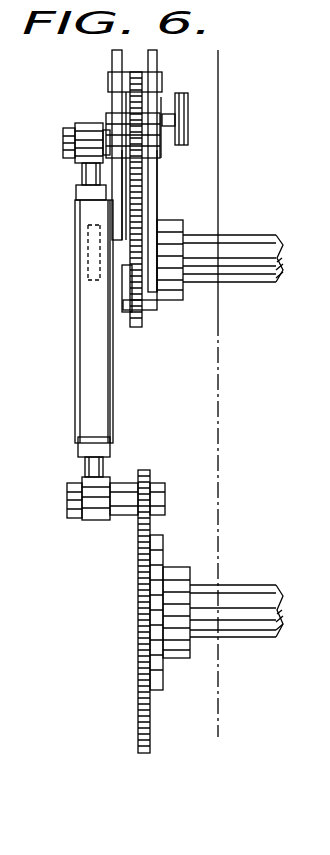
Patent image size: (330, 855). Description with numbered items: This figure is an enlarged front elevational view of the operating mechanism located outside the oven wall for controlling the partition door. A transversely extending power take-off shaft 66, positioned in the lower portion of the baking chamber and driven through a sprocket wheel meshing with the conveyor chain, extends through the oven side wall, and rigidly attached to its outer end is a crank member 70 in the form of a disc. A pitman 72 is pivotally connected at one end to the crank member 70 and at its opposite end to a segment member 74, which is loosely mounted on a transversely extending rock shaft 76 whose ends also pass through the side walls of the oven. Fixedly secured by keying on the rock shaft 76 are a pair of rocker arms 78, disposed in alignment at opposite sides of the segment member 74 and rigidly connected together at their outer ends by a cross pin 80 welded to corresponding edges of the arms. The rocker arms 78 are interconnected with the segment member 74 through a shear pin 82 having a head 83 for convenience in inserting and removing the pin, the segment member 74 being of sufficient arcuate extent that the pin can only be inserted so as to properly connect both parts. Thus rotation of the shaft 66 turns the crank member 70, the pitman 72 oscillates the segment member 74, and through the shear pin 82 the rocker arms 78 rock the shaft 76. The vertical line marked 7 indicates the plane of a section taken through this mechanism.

The section line 7 is at (198, 70).
The power take-off shaft 66 is at (243, 590).
The crank member 70 is at (138, 538).
The pitman 72 is at (77, 365).
The segment member 74 is at (140, 191).
The rock shaft 76 is at (243, 283).
The rocker arms 78 is at (153, 183).
The cross pin 80 is at (128, 72).
The shear pin 82 is at (110, 113).
The head 83 is at (188, 117).